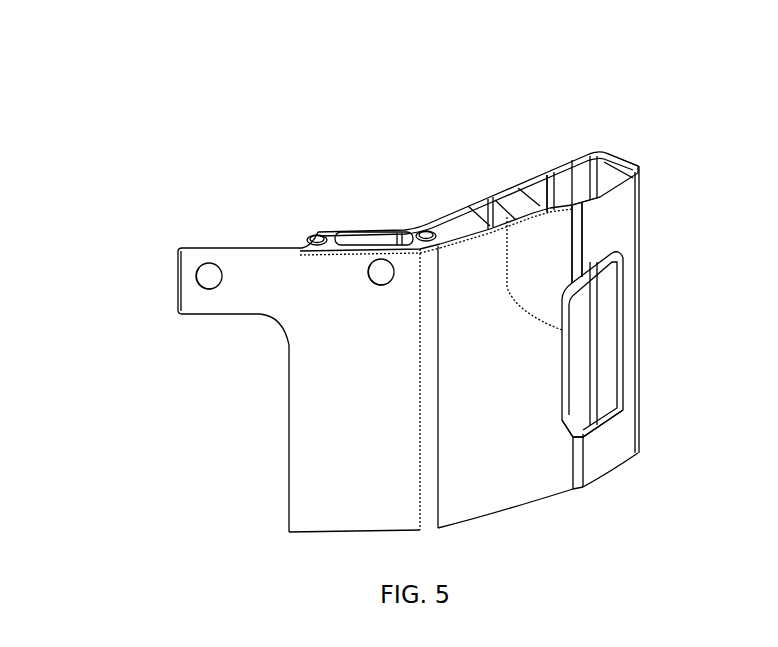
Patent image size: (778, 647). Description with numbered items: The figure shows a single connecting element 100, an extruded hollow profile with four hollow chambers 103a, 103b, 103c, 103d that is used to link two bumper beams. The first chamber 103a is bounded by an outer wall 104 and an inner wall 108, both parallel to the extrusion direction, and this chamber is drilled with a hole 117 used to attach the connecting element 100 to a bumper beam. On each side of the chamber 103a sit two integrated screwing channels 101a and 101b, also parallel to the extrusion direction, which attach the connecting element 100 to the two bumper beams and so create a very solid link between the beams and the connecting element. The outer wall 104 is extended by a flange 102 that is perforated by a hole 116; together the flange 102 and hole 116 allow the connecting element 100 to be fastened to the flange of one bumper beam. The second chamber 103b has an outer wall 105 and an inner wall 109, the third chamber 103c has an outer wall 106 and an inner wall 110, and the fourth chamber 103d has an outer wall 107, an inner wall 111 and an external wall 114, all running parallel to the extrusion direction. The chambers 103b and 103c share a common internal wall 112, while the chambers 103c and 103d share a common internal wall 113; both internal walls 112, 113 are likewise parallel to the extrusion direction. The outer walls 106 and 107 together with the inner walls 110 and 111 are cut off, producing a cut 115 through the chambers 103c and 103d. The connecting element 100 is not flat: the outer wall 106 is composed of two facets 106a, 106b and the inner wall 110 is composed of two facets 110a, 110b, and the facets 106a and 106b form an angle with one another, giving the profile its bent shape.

The connecting element 100 is at (112, 178).
The screwing channel 101a is at (317, 234).
The screwing channel 101b is at (426, 230).
The flange 102 is at (203, 312).
The hollow chamber 103a is at (353, 234).
The hollow chamber 103b is at (451, 224).
The hollow chamber 103c is at (533, 201).
The hollow chamber 103d is at (607, 171).
The outer wall 104 is at (397, 403).
The outer wall 105 is at (483, 402).
The outer wall 106 is at (543, 388).
The facet 106a is at (547, 243).
The facet 106b is at (596, 222).
The outer wall 107 is at (632, 352).
The inner wall 108 is at (383, 232).
The inner wall 109 is at (466, 203).
The inner wall 110 is at (507, 191).
The facet 110a is at (518, 188).
The facet 110b is at (543, 178).
The inner wall 111 is at (573, 154).
The common internal wall 112 is at (600, 333).
The common internal wall 113 is at (598, 197).
The external wall 114 is at (627, 153).
The cut 115 is at (580, 393).
The hole 116 is at (208, 275).
The hole 117 is at (367, 270).